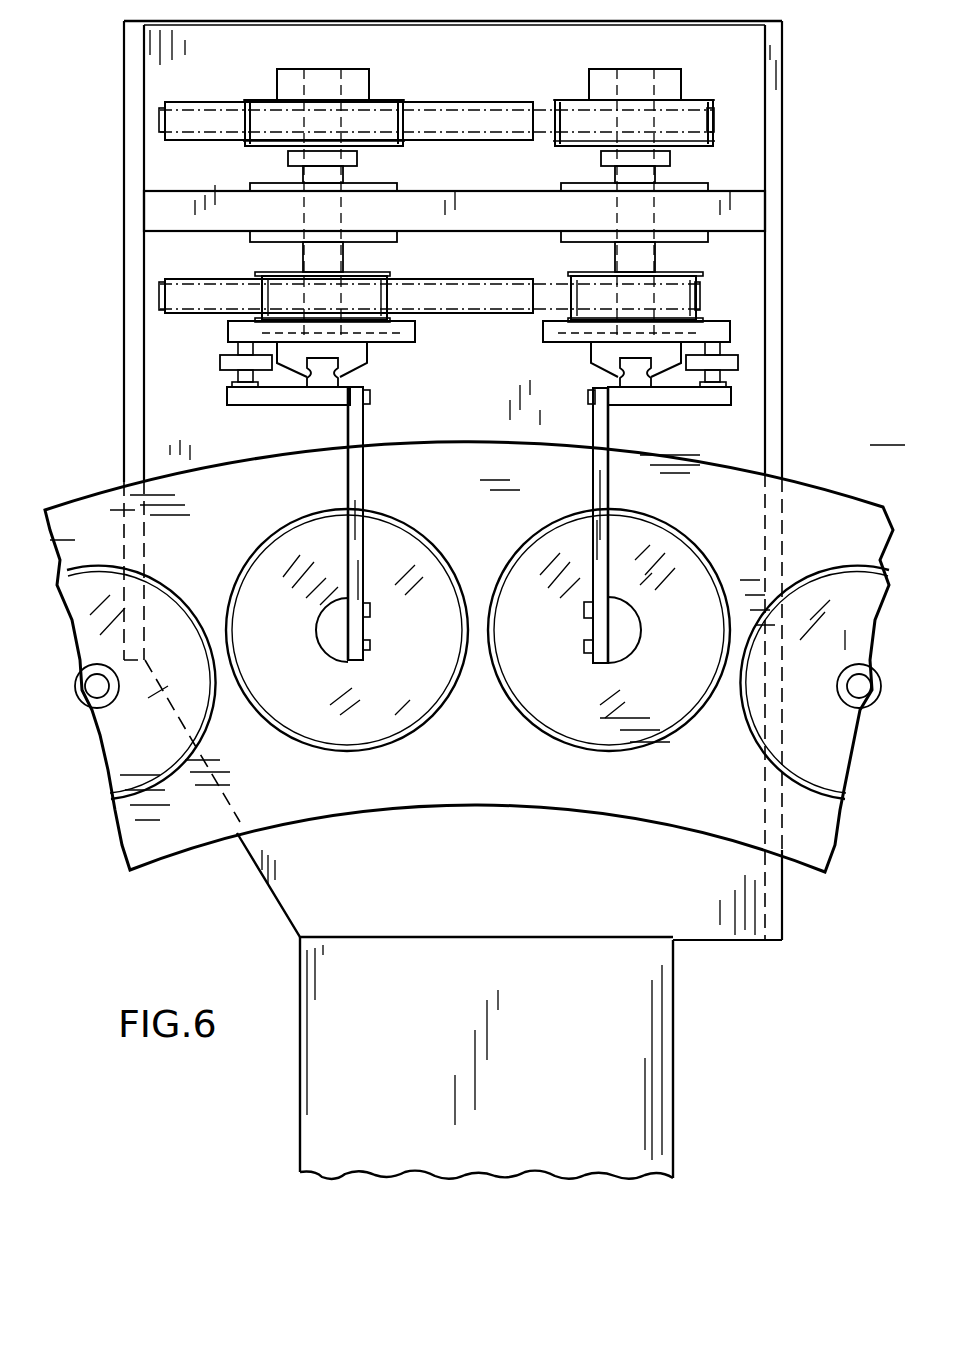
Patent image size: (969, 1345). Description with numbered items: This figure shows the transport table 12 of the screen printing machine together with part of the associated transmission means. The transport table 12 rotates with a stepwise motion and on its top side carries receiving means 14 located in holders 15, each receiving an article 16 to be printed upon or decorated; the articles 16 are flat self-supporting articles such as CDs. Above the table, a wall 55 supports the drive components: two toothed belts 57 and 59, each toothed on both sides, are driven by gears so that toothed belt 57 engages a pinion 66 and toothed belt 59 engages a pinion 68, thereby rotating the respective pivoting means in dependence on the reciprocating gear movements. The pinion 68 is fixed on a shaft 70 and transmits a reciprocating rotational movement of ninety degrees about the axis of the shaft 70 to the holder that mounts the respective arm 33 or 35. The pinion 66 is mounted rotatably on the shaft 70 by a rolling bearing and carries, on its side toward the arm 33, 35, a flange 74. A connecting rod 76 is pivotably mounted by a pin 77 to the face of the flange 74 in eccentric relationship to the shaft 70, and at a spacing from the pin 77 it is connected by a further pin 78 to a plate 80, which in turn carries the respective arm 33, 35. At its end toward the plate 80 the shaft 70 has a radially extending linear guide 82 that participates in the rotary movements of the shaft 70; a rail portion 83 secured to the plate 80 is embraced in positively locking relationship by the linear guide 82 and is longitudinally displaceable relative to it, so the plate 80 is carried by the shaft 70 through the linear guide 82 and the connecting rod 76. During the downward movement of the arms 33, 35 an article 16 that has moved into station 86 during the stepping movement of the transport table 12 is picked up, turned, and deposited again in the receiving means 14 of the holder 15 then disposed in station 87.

The transport table 12 is at (827, 512).
The receiving means 14 is at (330, 742).
The holder 15 is at (256, 800).
The article 16 is at (517, 683).
The arm 33 is at (363, 483).
The arm 35 is at (593, 480).
The wall 55 is at (457, 206).
The toothed belt 57 is at (485, 320).
The toothed belt 59 is at (490, 100).
The pinion 66 is at (372, 273).
The pinion 68 is at (378, 107).
The shaft 70 is at (313, 256).
The flange 74 is at (415, 342).
The connecting rod 76 is at (220, 364).
The pin 77 is at (243, 348).
The pin 78 is at (238, 378).
The plate 80 is at (230, 406).
The linear guide 82 is at (353, 366).
The rail portion 83 is at (323, 381).
The station 86 is at (151, 461).
The station 87 is at (744, 450).